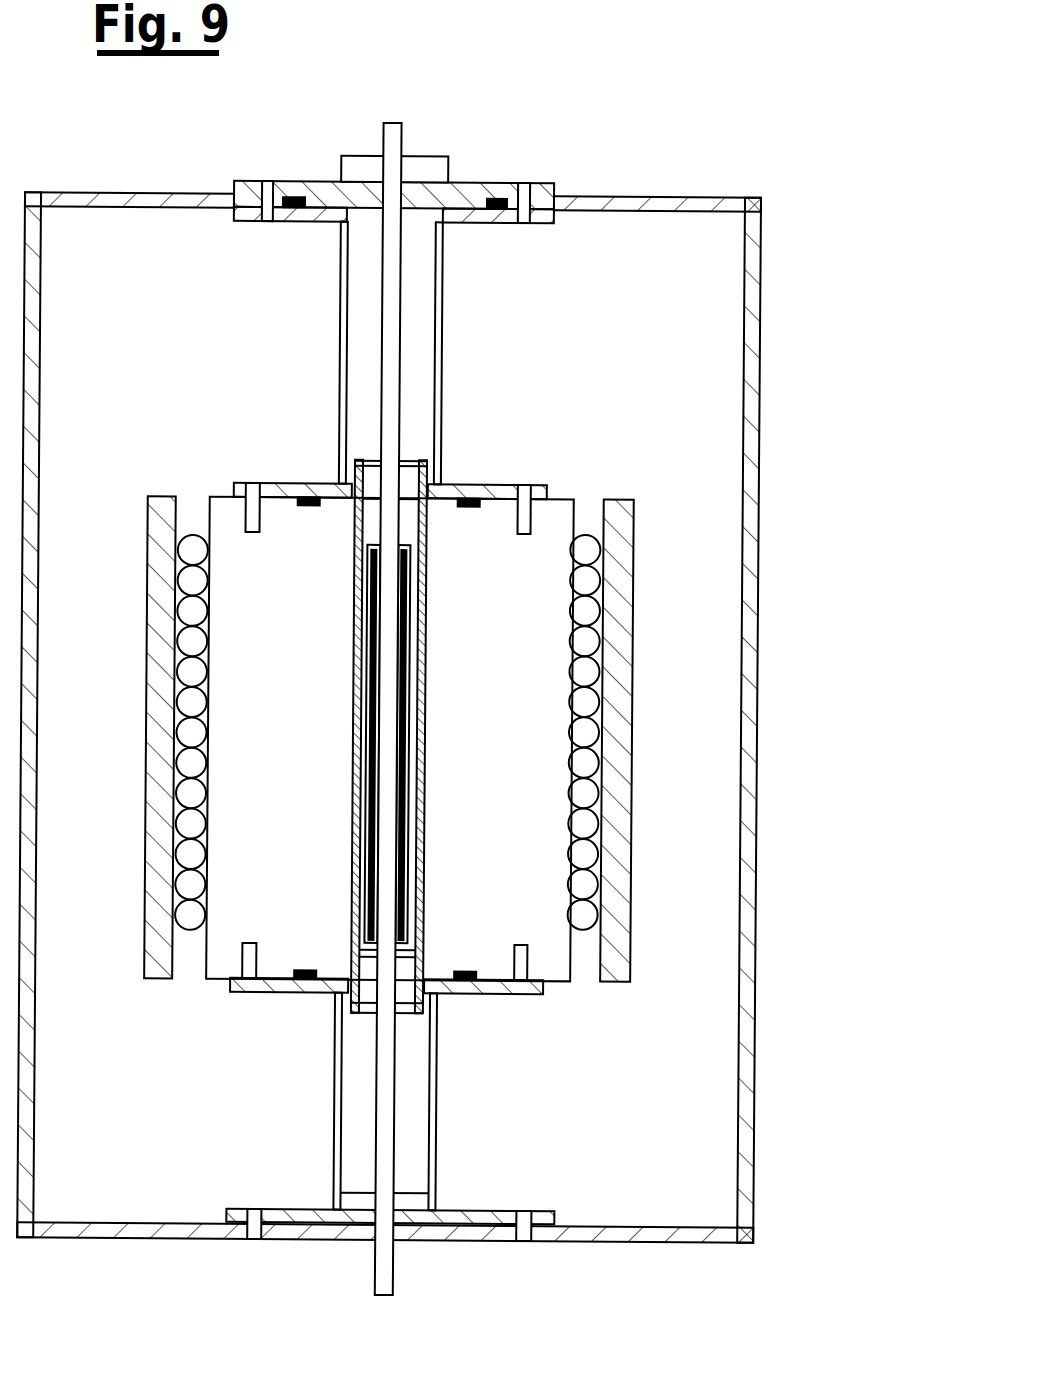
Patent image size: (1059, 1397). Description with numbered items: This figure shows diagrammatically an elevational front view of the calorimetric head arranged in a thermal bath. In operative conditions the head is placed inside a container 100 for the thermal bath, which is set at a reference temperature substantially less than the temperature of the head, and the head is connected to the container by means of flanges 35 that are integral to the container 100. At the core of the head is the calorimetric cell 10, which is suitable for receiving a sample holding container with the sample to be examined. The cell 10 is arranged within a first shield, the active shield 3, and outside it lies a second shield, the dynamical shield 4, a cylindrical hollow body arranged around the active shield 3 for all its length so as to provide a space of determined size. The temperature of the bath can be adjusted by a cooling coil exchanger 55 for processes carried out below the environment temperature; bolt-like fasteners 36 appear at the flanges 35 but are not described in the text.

The container 100 is at (816, 272).
The flanges 35 is at (563, 194).
The bolt 36 is at (512, 182).
The dynamical shield 4 is at (428, 538).
The active shield 3 is at (413, 582).
The cooling coil exchanger 55 is at (597, 921).
The calorimetric cell 10 is at (361, 1286).